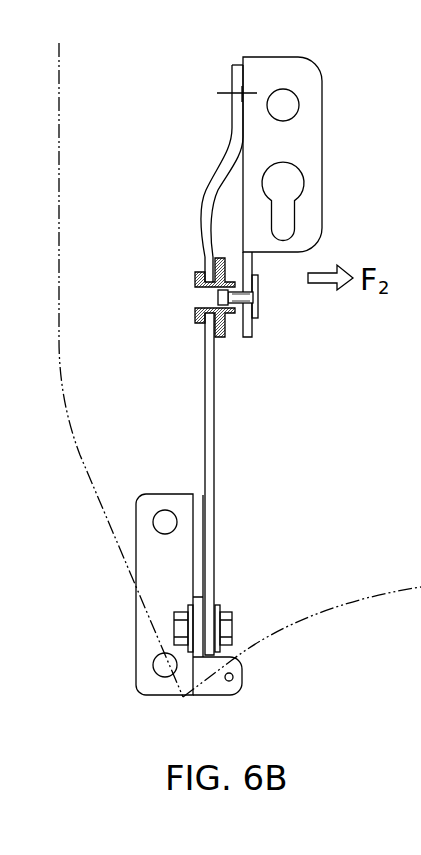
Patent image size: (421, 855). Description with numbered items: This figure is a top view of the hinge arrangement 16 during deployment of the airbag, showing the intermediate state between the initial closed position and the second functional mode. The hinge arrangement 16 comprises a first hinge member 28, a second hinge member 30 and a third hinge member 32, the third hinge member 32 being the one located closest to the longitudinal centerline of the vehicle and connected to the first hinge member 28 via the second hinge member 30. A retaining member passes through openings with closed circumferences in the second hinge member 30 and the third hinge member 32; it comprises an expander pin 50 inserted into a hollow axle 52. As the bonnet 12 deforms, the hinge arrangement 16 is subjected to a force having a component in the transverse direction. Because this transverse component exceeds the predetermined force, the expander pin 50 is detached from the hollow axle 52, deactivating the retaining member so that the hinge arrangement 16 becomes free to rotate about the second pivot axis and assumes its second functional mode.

The bonnet 12 is at (349, 521).
The hinge arrangement 16 is at (186, 92).
The first hinge member 28 is at (159, 567).
The second hinge member 30 is at (225, 167).
The third hinge member 32 is at (300, 147).
The expander pin 50 is at (250, 299).
The hollow axle 52 is at (198, 315).